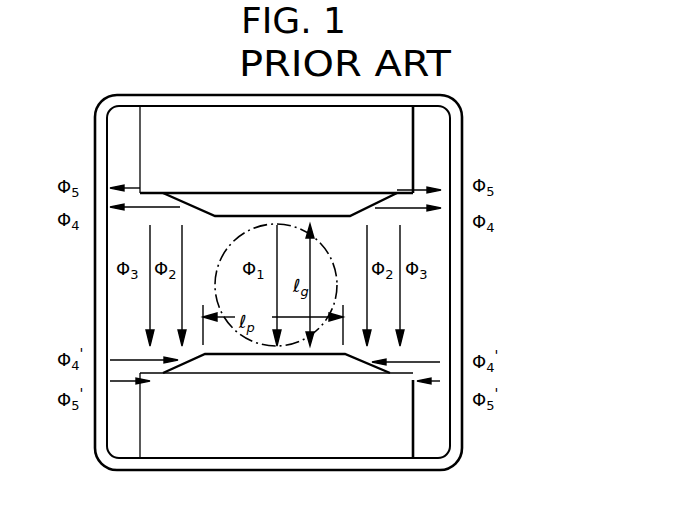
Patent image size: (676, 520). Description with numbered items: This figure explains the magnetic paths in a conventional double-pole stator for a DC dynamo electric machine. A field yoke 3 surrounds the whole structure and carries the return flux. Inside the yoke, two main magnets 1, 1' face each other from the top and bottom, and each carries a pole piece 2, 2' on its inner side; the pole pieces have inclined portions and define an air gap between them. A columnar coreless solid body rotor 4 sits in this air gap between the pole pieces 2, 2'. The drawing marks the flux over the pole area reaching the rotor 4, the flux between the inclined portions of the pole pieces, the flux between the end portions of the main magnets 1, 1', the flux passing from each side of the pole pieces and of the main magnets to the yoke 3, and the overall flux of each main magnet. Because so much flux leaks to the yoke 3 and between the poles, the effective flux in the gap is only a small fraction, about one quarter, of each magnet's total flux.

The main magnet 1 is at (276, 120).
The main magnet 1' is at (276, 439).
The pole piece 2 is at (280, 177).
The pole piece 2' is at (276, 385).
The field yoke 3 is at (462, 272).
The columnar coreless solid body rotor 4 is at (232, 238).